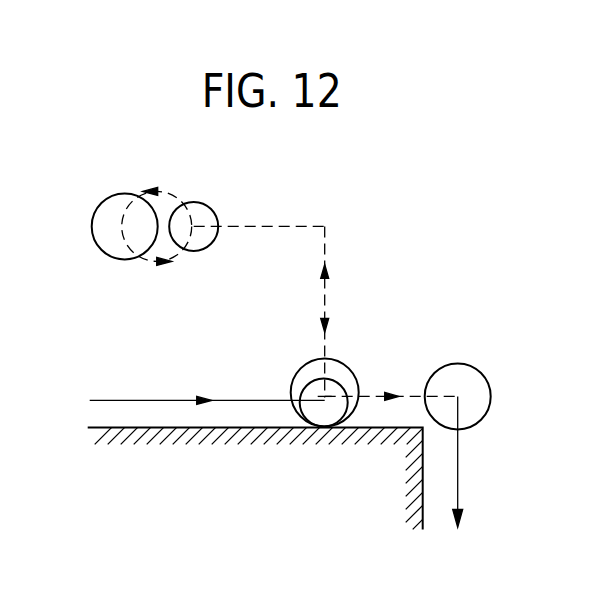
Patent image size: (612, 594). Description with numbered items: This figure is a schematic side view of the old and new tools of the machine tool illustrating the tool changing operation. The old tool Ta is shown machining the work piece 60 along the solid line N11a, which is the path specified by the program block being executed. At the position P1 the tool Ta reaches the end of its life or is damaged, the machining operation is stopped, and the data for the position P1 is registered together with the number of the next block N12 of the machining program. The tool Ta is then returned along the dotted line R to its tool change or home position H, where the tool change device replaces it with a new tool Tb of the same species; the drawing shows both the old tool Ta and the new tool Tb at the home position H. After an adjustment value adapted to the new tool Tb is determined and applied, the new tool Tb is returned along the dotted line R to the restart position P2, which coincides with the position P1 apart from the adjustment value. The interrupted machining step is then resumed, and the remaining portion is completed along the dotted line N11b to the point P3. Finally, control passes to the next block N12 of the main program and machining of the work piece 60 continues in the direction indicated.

The work piece 60 is at (397, 487).
The solid line N11a is at (175, 400).
The dotted line N11b is at (404, 396).
The next block N12 is at (458, 470).
The dotted line R is at (327, 291).
The tool change or home position H is at (194, 226).
The new tool Tb is at (113, 260).
The old tool Ta is at (200, 252).
The position P1 is at (316, 427).
The restart position P2 is at (326, 397).
The point P3 is at (458, 397).